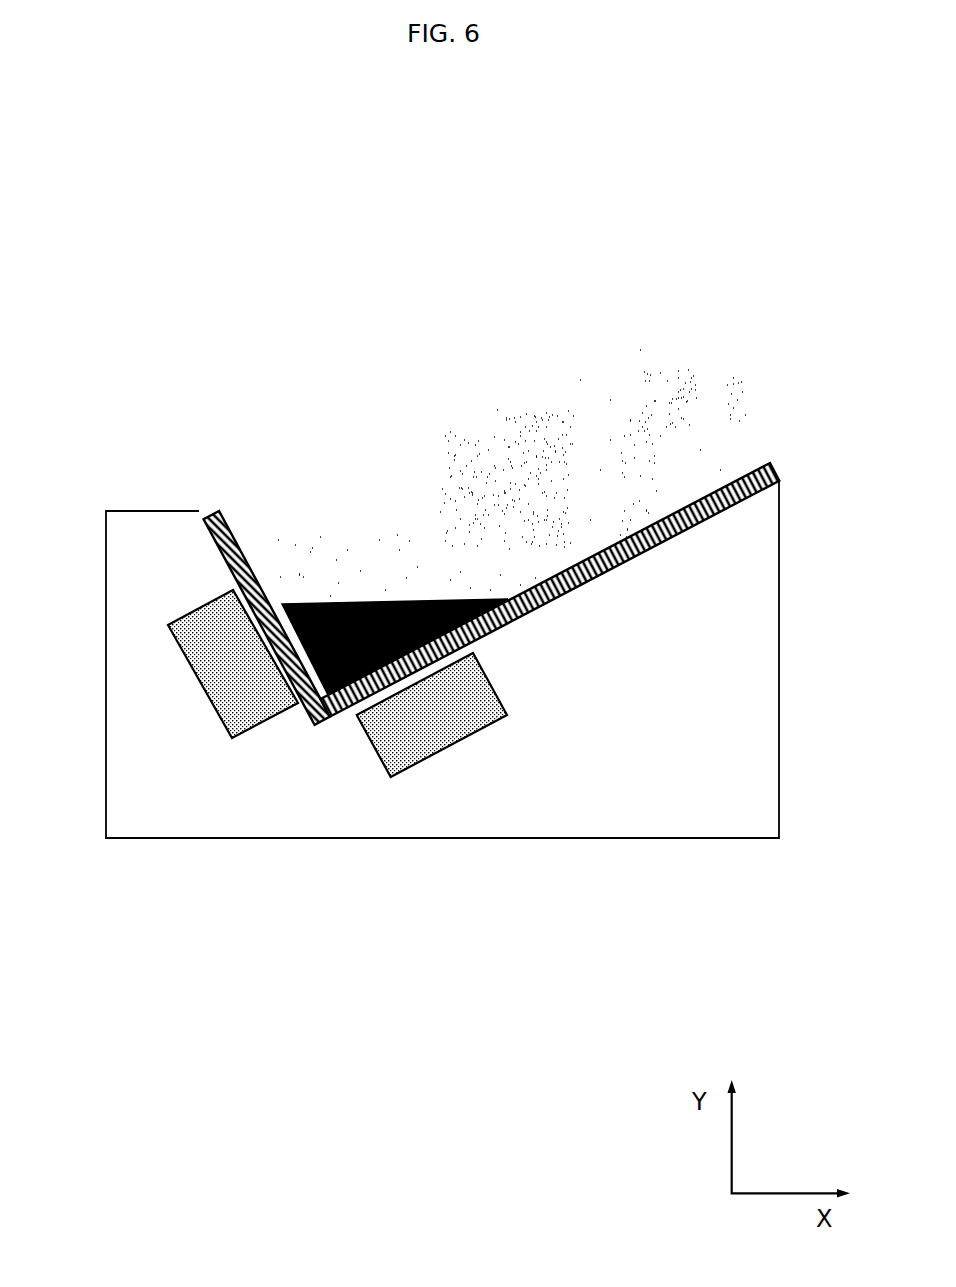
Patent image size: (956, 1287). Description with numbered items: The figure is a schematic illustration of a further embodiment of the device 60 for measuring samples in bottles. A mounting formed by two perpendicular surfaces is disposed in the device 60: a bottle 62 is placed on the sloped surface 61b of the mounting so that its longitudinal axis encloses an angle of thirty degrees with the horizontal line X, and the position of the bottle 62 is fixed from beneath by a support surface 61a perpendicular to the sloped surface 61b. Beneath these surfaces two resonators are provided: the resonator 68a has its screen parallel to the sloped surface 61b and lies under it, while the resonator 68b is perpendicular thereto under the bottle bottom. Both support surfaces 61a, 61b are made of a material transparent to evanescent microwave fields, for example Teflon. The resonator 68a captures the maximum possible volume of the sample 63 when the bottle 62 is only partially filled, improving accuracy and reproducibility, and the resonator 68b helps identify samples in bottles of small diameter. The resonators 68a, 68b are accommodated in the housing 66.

The device 60 is at (180, 236).
The support surface 61a is at (231, 518).
The sloped surface 61b is at (649, 558).
The bottle 62 is at (537, 394).
The sample 63 is at (386, 597).
The housing 66 is at (252, 846).
The resonator 68a is at (446, 755).
The resonator 68b is at (201, 696).